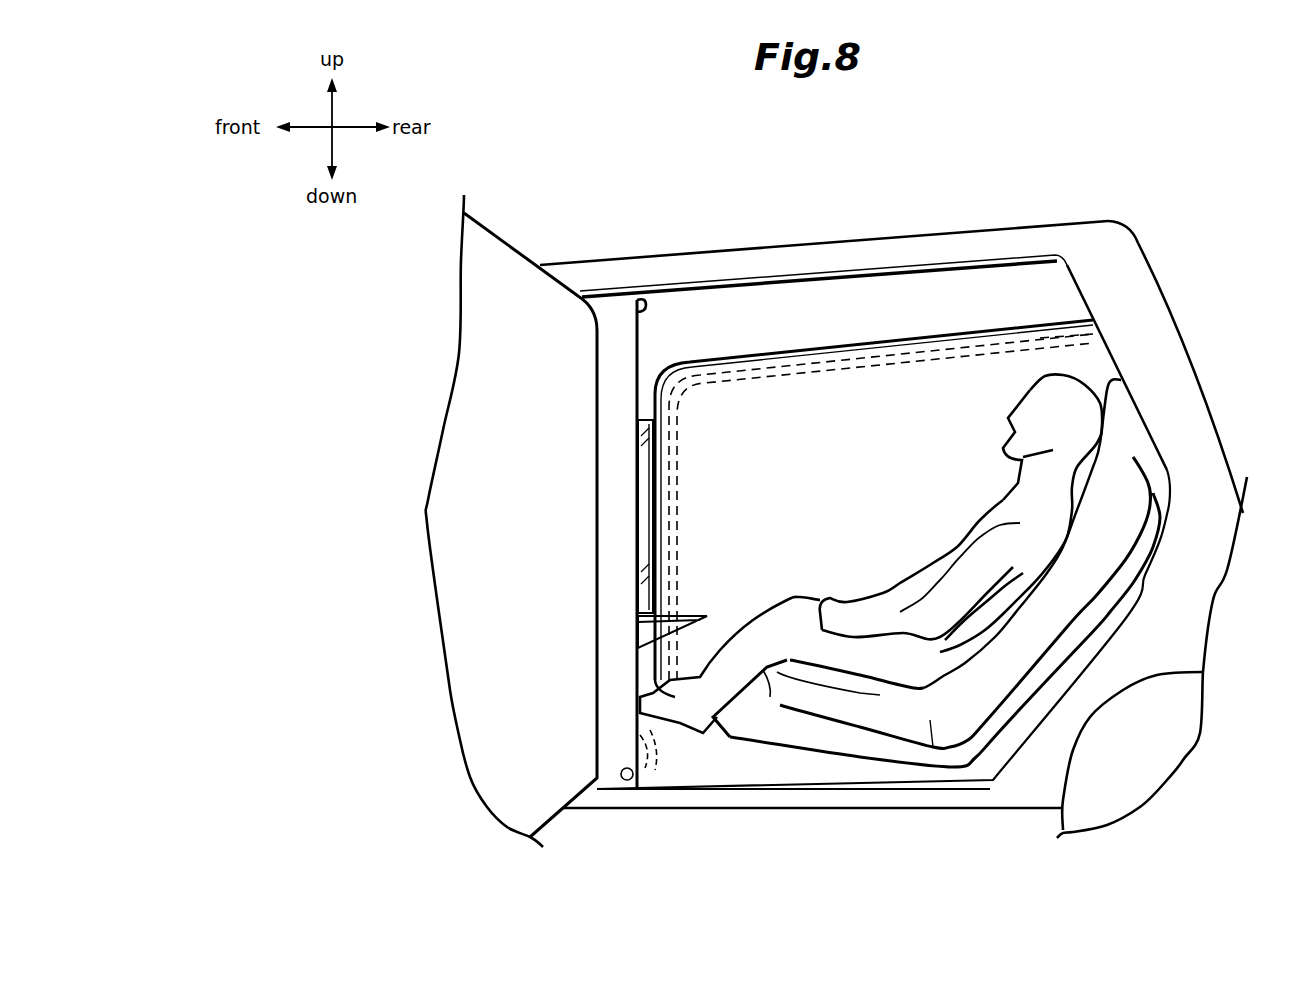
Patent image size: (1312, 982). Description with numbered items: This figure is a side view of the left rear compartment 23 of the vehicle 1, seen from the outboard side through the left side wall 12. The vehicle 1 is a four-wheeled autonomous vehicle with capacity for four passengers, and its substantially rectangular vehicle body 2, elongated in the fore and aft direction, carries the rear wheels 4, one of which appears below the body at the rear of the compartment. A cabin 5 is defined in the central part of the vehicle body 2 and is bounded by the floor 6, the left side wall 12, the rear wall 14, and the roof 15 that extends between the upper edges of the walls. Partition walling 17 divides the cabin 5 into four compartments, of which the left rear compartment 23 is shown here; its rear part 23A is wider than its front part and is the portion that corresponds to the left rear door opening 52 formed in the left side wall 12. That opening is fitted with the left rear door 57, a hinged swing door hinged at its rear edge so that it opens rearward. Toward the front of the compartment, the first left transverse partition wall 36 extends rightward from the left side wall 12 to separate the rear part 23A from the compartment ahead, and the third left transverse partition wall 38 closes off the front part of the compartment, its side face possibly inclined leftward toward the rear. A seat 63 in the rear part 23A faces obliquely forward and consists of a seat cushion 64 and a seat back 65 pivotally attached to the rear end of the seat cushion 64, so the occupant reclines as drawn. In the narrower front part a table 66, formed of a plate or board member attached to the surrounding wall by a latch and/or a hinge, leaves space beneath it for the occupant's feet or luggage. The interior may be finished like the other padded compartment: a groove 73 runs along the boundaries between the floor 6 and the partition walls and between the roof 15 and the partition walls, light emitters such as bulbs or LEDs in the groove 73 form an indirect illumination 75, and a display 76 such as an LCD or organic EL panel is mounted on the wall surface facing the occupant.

The vehicle 1 is at (1051, 178).
The vehicle body 2 is at (842, 253).
The rear wheels 4 is at (1177, 747).
The cabin 5 is at (942, 300).
The floor 6 is at (743, 768).
The left side wall 12 is at (1143, 280).
The rear wall 14 is at (1220, 427).
The roof 15 is at (657, 255).
The partition walling 17 is at (892, 416).
The left rear compartment 23 is at (809, 401).
The rear part of left rear compartment 23A is at (1083, 360).
The first left transverse partition wall 36 is at (610, 543).
The third left transverse partition wall 38 is at (987, 370).
The left rear door opening 52 is at (824, 782).
The left rear door 57 is at (463, 614).
The seat 63 is at (1123, 441).
The seat cushion 64 is at (898, 727).
The seat back 65 is at (1103, 537).
The table 66 is at (640, 632).
The groove 73 is at (723, 360).
The indirect illumination 75 is at (655, 408).
The display 76 is at (643, 473).